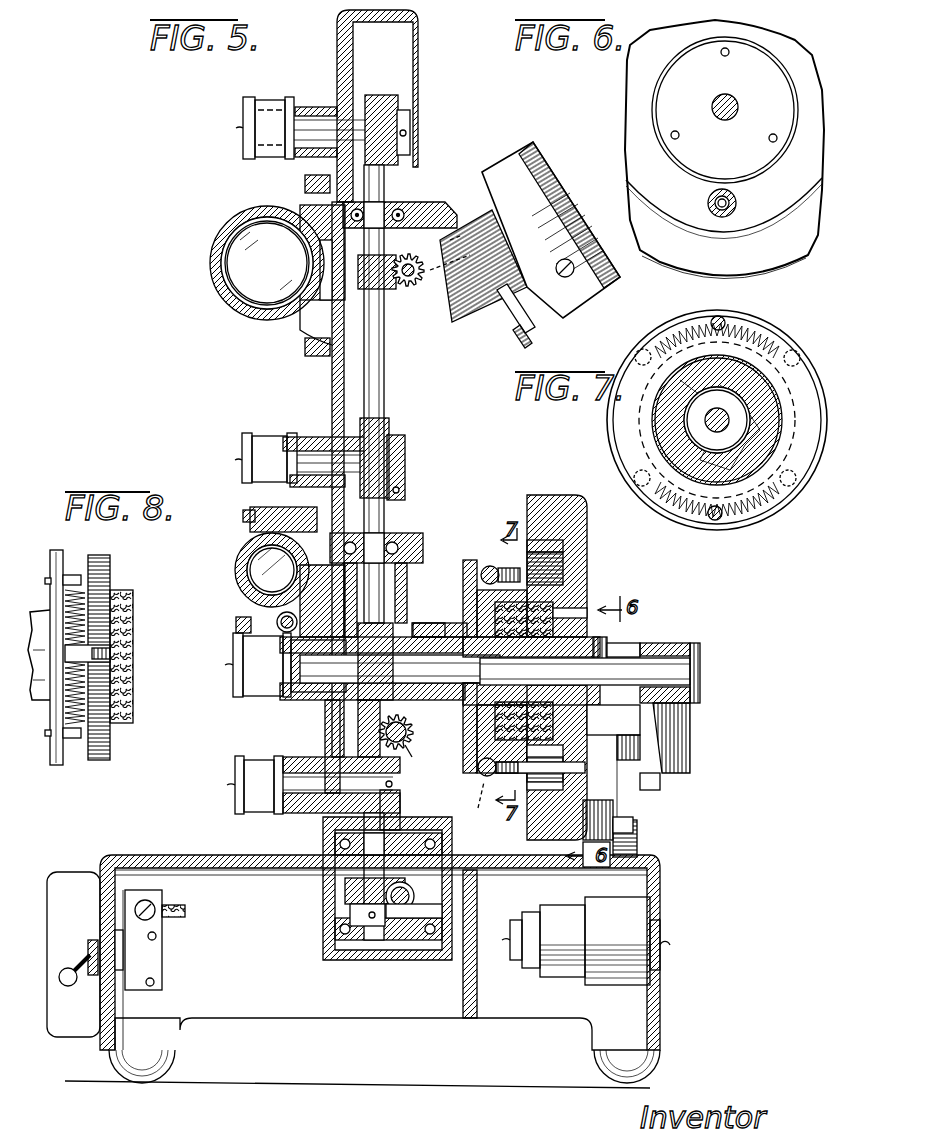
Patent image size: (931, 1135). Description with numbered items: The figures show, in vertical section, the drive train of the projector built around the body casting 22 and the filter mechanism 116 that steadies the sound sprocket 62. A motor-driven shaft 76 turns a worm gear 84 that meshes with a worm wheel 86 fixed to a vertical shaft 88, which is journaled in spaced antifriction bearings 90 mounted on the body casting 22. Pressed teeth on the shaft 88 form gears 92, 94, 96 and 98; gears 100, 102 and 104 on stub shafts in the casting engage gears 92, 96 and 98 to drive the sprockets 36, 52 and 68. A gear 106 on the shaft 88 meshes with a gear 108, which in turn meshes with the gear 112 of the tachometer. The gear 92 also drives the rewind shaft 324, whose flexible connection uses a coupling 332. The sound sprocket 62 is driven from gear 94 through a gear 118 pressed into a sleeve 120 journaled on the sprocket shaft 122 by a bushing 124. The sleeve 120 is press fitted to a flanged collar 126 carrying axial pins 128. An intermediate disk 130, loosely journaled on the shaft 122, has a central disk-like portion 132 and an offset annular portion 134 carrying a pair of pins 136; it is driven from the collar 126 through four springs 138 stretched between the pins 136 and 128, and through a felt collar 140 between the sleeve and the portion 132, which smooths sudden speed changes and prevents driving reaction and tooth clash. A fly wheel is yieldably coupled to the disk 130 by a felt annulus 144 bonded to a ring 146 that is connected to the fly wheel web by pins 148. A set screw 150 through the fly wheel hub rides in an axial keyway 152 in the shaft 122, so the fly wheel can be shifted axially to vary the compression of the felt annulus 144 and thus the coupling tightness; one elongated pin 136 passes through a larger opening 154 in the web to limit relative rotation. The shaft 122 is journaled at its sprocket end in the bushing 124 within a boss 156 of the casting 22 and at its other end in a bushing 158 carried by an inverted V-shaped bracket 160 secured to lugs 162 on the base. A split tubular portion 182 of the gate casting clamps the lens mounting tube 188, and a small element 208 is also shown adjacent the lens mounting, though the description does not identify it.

In FIG. 5, the body casting 22 is at (332, 385).
In FIG. 5, the sprocket 36 is at (262, 160).
In FIG. 5, the sprocket 52 is at (262, 436).
In FIG. 5, the sound sprocket 62 is at (243, 682).
In FIG. 5, the sprocket 68 is at (248, 800).
In FIG. 5, the shaft 76 is at (392, 900).
In FIG. 5, the worm gear 84 is at (412, 887).
In FIG. 5, the worm wheel 86 is at (345, 890).
In FIG. 5, the vertical shaft 88 is at (384, 387).
In FIG. 5, the antifriction bearings 90 is at (398, 210).
In FIG. 5, the gear 92 is at (326, 732).
In FIG. 5, the gear 94 is at (388, 630).
In FIG. 5, the gear 96 is at (389, 428).
In FIG. 5, the gear 98 is at (380, 95).
In FIG. 5, the gear 100 is at (358, 755).
In FIG. 5, the gear 102 is at (406, 480).
In FIG. 5, the gear 104 is at (408, 122).
In FIG. 5, the gear 106 is at (310, 318).
In FIG. 5, the gear 108 is at (415, 256).
In FIG. 5, the gear 112 is at (515, 305).
In FIG. 5, the filter mechanism 116 is at (482, 548).
In FIG. 5, the gear 118 is at (402, 640).
In FIG. 5, the sleeve 120 is at (447, 632).
In FIG. 5, the shaft 122 is at (690, 670).
In FIG. 6, the shaft 122 is at (736, 92).
In FIG. 7, the shaft 122 is at (712, 420).
In FIG. 5, the bearing or bushing 124 is at (412, 733).
In FIG. 5, the flanged collar or disk 126 is at (470, 572).
In FIG. 8, the flanged collar or disk 126 is at (57, 550).
In FIG. 7, the pins 128 is at (636, 356).
In FIG. 8, the pins 128 is at (72, 575).
In FIG. 5, the intermediate disk 130 is at (506, 545).
In FIG. 8, the intermediate disk 130 is at (112, 578).
In FIG. 5, the central disk-like portion 132 is at (542, 610).
In FIG. 7, the central disk-like portion 132 is at (688, 368).
In FIG. 8, the central disk-like portion 132 is at (125, 722).
In FIG. 5, the offset annular portion 134 is at (558, 588).
In FIG. 5, the pins 136 is at (585, 768).
In FIG. 6, the pins 136 is at (712, 203).
In FIG. 7, the pins 136 is at (722, 318).
In FIG. 8, the pins 136 is at (85, 655).
In FIG. 5, the springs 138 is at (474, 803).
In FIG. 7, the springs 138 is at (685, 335).
In FIG. 8, the springs 138 is at (85, 620).
In FIG. 5, the felt collar 140 is at (478, 650).
In FIG. 5, the felt collar or annulus 144 is at (553, 721).
In FIG. 5, the ring or annulus 146 is at (605, 640).
In FIG. 5, the pins 148 is at (583, 608).
In FIG. 6, the pins 148 is at (729, 52).
In FIG. 5, the set screw 150 is at (620, 645).
In FIG. 5, the keyway or axial groove 152 is at (645, 645).
In FIG. 5, the opening 154 is at (593, 778).
In FIG. 6, the opening 154 is at (712, 212).
In FIG. 5, the boss 156 is at (300, 690).
In FIG. 5, the bearing or bushing 158 is at (690, 690).
In FIG. 5, the inverted V-shaped bracket 160 is at (665, 740).
In FIG. 5, the lugs 162 is at (610, 866).
In FIG. 5, the split tubular portion 182 is at (250, 582).
In FIG. 5, the lens mounting tube 188 is at (248, 560).
In FIG. 5, the clamp screw 208 is at (246, 620).
In FIG. 5, the rewind shaft 324 is at (411, 805).
In FIG. 5, the coupling 332 is at (427, 755).